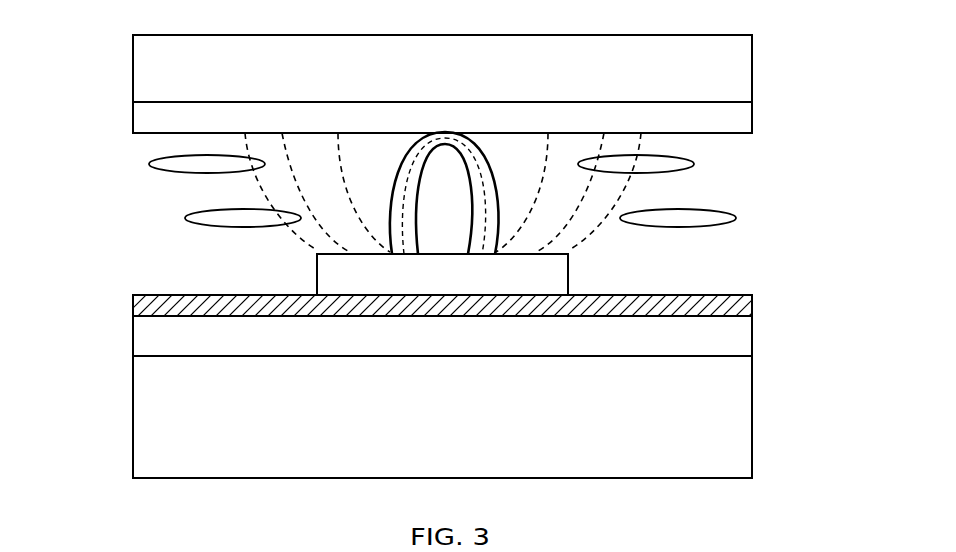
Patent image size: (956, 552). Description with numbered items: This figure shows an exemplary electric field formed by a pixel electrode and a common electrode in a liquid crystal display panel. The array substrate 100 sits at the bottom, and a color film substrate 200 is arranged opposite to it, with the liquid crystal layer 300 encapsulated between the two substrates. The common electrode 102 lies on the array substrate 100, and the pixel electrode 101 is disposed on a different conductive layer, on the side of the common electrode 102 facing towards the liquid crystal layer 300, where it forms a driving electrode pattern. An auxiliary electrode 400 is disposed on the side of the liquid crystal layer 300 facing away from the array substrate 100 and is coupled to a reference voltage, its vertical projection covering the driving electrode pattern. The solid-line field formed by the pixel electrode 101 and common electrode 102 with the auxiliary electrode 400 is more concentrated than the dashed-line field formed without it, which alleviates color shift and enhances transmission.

The array substrate 100 is at (208, 405).
The pixel electrode 101 is at (543, 283).
The common electrode 102 is at (705, 340).
The color film substrate 200 is at (708, 78).
The liquid crystal layer 300 is at (200, 203).
The auxiliary electrode 400 is at (713, 122).